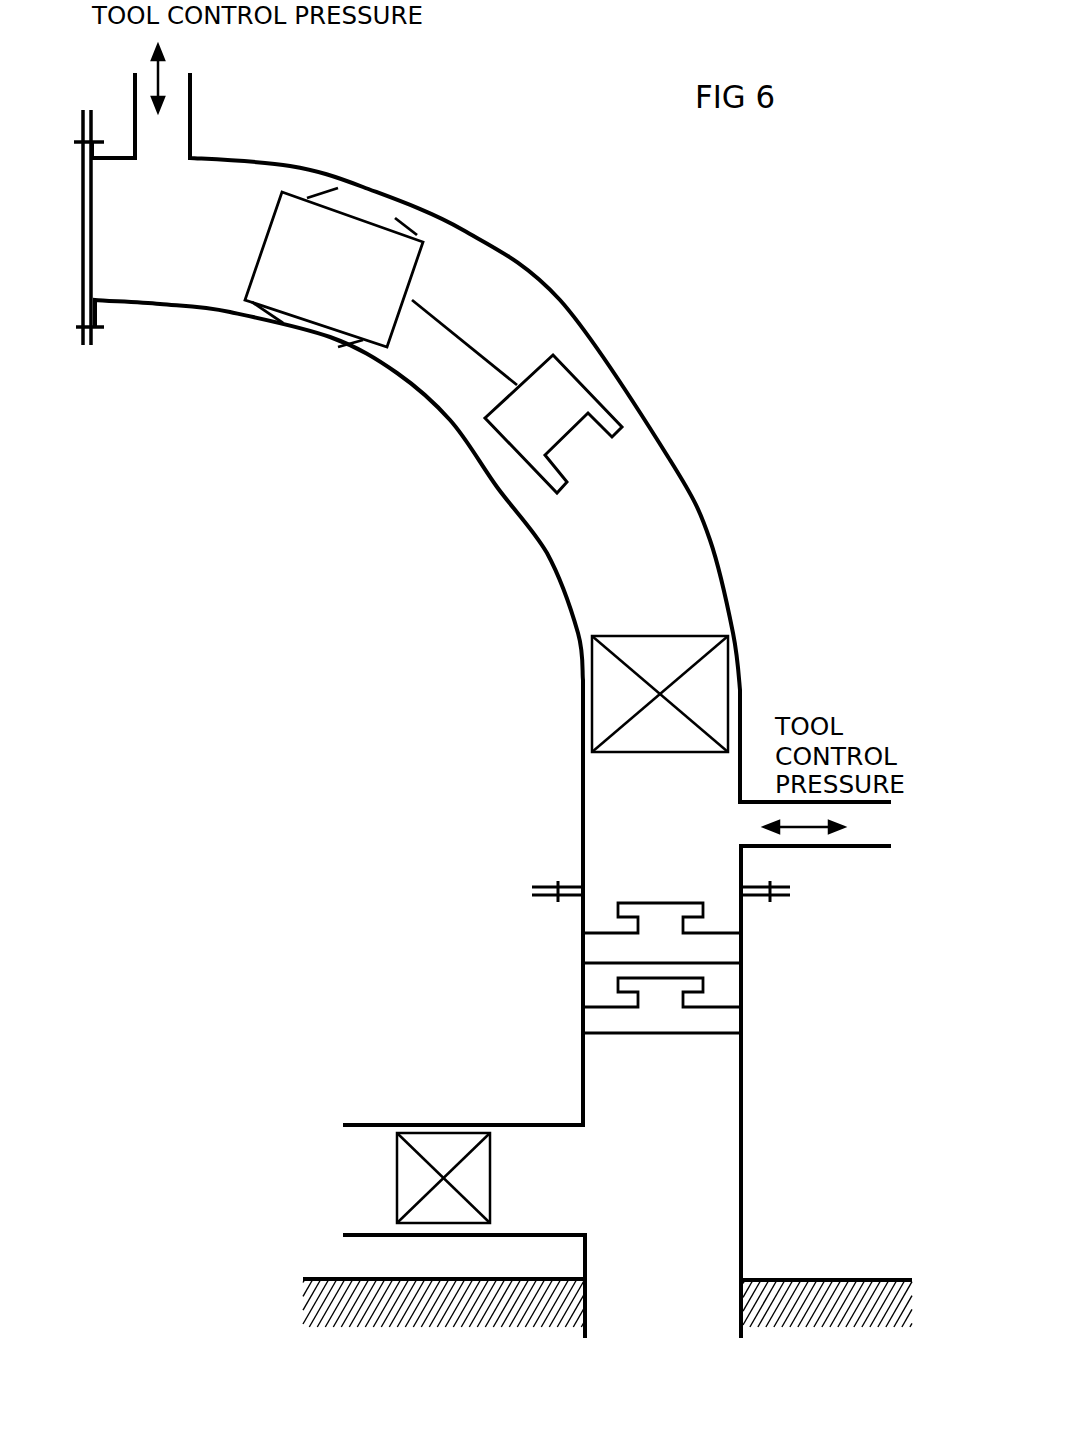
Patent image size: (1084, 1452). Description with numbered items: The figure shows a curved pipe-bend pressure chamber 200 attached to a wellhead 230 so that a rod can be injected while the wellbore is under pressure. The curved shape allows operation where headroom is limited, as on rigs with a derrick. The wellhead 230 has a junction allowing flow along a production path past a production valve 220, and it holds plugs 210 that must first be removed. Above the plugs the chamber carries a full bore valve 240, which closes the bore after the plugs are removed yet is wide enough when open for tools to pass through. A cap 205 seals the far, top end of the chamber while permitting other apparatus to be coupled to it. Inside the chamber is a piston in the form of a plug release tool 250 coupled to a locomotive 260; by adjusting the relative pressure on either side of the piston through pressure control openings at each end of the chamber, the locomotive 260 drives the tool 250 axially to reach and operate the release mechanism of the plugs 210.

The pressure chamber 200 is at (400, 390).
The cap 205 is at (93, 245).
The plugs 210 is at (635, 1017).
The production valve 220 is at (442, 1150).
The wellhead 230 is at (750, 1152).
The full bore valve 240 is at (605, 665).
The plug release tool 250 is at (547, 417).
The locomotive 260 is at (327, 242).